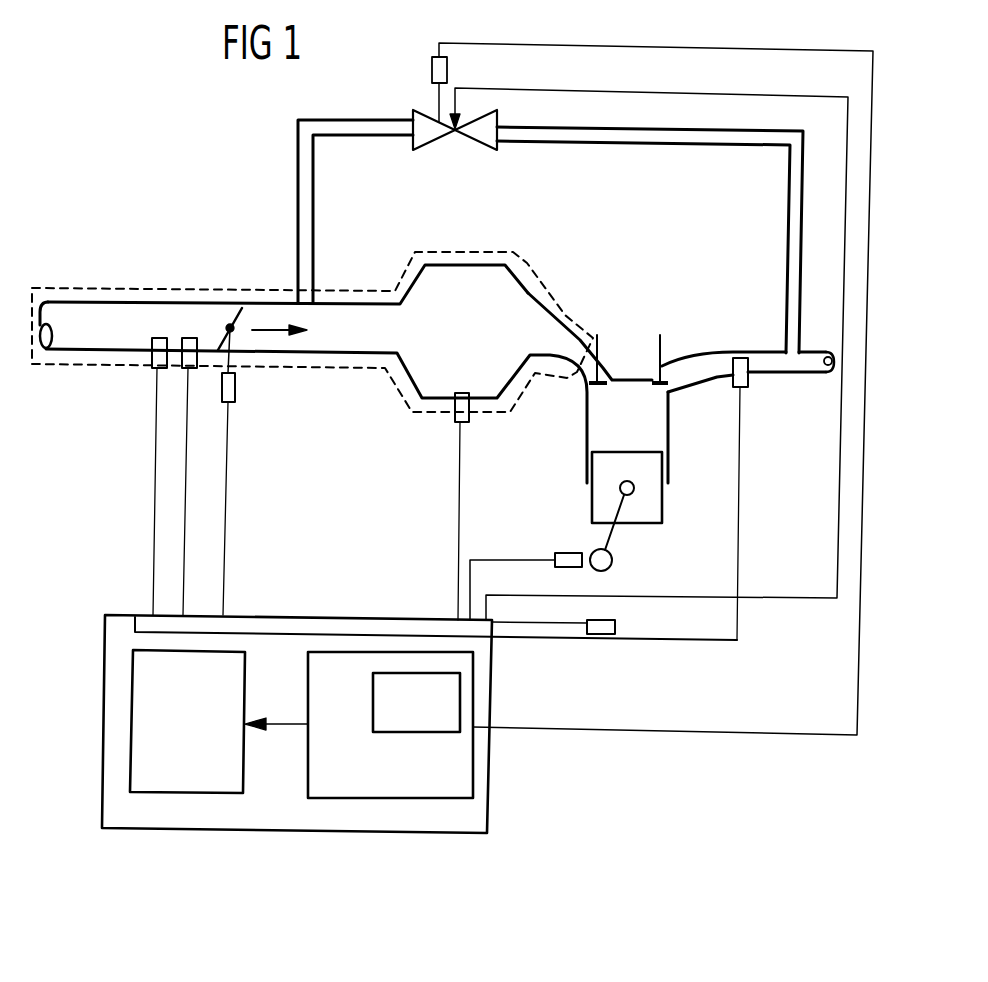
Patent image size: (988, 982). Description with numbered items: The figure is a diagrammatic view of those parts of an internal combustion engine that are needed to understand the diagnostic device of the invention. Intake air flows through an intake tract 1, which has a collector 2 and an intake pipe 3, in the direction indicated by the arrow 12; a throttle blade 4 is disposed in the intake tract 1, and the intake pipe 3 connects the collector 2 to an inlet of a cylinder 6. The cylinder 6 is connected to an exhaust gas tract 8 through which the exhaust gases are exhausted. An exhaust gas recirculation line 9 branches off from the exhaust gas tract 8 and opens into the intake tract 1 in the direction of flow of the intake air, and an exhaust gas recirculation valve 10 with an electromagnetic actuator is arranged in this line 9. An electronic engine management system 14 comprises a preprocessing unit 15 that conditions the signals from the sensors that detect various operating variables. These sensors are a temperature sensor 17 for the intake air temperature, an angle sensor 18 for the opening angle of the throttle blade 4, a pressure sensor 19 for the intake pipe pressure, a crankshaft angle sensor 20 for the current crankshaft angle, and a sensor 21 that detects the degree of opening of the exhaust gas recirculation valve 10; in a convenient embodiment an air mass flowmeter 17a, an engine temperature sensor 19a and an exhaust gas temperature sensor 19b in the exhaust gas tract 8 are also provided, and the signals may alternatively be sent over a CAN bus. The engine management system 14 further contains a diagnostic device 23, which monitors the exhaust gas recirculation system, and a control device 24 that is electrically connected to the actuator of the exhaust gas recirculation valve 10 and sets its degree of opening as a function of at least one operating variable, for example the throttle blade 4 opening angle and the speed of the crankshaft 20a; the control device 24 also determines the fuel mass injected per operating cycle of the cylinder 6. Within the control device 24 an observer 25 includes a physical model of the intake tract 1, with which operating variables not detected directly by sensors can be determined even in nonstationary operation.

The intake tract 1 is at (387, 292).
The collector 2 is at (532, 282).
The intake pipe 3 is at (560, 320).
The throttle blade 4 is at (229, 323).
The cylinder 6 is at (657, 417).
The exhaust gas tract 8 is at (787, 373).
The exhaust gas recirculation line 9 is at (573, 142).
The exhaust gas recirculation valve 10 is at (426, 150).
The arrow 12 is at (268, 327).
The electronic engine management system 14 is at (115, 630).
The preprocessing unit 15 is at (338, 620).
The temperature sensor 17 is at (150, 366).
The air mass flowmeter 17a is at (185, 370).
The angle sensor 18 is at (236, 388).
The pressure sensor 19 is at (463, 424).
The engine temperature sensor 19a is at (617, 627).
The exhaust gas temperature sensor 19b is at (745, 390).
The crankshaft angle sensor 20 is at (566, 552).
The crankshaft 20a is at (615, 560).
The sensor for the degree of opening 21 is at (432, 68).
The diagnostic device 23 is at (145, 710).
The control device 24 is at (457, 773).
The observer 25 is at (418, 722).